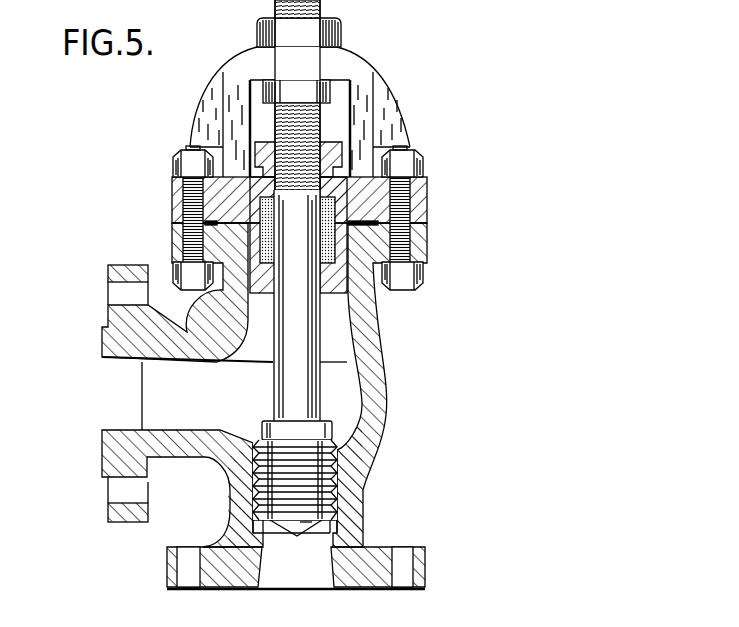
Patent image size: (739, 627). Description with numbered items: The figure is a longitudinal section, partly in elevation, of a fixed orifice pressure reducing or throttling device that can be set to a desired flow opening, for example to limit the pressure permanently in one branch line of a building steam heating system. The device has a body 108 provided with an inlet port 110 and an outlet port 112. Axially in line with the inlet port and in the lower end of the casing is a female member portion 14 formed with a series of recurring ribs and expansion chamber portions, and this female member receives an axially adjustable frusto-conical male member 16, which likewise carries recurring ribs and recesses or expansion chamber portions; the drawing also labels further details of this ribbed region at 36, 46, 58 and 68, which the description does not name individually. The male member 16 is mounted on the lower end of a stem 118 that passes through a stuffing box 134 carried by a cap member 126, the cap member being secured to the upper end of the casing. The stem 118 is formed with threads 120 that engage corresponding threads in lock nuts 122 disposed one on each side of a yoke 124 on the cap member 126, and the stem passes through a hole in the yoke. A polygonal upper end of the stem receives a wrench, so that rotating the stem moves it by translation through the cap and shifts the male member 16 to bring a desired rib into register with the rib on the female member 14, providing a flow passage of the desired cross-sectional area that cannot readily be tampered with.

The female member portion 14 is at (350, 498).
The frusto-conical male member 16 is at (302, 527).
The disc retainer 36 is at (305, 525).
The stem collar 46 is at (320, 432).
The valve seat 58 is at (333, 534).
The threaded disc holder 68 is at (340, 458).
The body 108 is at (381, 408).
The inlet port 110 is at (305, 577).
The outlet port 112 is at (123, 358).
The stem 118 is at (305, 392).
The threads 120 is at (287, 123).
The lock nuts 122 is at (280, 95).
The yoke 124 is at (372, 112).
The cap member 126 is at (422, 196).
The stuffing box 134 is at (342, 153).